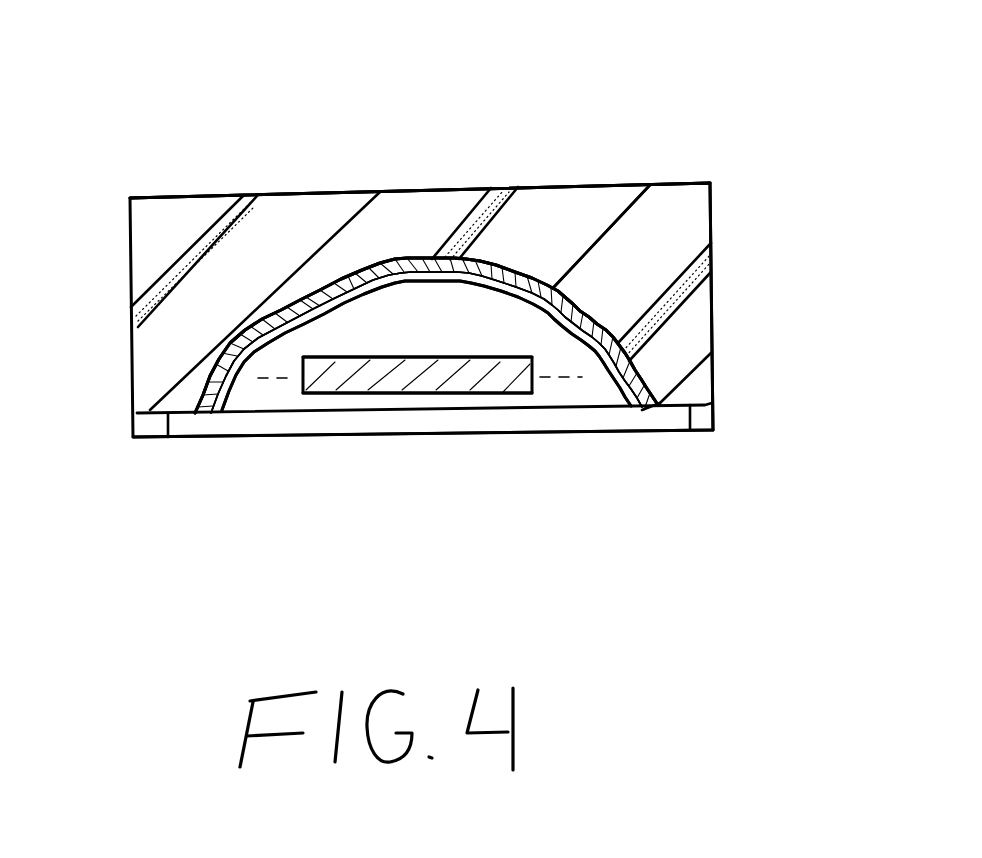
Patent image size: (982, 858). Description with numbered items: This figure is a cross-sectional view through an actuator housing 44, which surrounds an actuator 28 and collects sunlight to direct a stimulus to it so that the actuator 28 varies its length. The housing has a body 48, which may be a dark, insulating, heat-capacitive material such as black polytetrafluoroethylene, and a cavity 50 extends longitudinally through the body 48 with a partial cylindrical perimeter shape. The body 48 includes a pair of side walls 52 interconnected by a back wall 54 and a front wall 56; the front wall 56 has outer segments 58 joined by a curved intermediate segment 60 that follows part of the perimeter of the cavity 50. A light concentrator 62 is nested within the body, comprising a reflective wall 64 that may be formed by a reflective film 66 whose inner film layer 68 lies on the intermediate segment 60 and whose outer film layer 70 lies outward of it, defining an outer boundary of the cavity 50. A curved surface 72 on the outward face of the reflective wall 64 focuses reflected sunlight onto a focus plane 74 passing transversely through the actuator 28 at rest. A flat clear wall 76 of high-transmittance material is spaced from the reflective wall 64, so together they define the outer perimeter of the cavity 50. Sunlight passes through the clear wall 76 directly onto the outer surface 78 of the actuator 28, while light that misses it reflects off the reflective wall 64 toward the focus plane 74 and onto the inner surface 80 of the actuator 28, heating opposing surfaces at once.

The actuator 28 is at (508, 390).
The actuator housing 44 is at (467, 100).
The body 48 is at (716, 296).
The cavity 50 is at (520, 333).
The side walls 52 is at (127, 252).
The back wall 54 is at (622, 183).
The front wall 56 is at (670, 409).
The outer segments 58 is at (168, 441).
The intermediate segment 60 is at (509, 265).
The light concentrator 62 is at (240, 397).
The reflective wall 64 is at (393, 257).
The reflective film 66 is at (315, 313).
The inner film layer 68 is at (344, 272).
The outer film layer 70 is at (358, 280).
The curved surface 72 is at (450, 284).
The focus plane 74 is at (568, 380).
The clear wall 76 is at (287, 431).
The outer surface 78 is at (442, 395).
The inner surface 80 is at (440, 358).